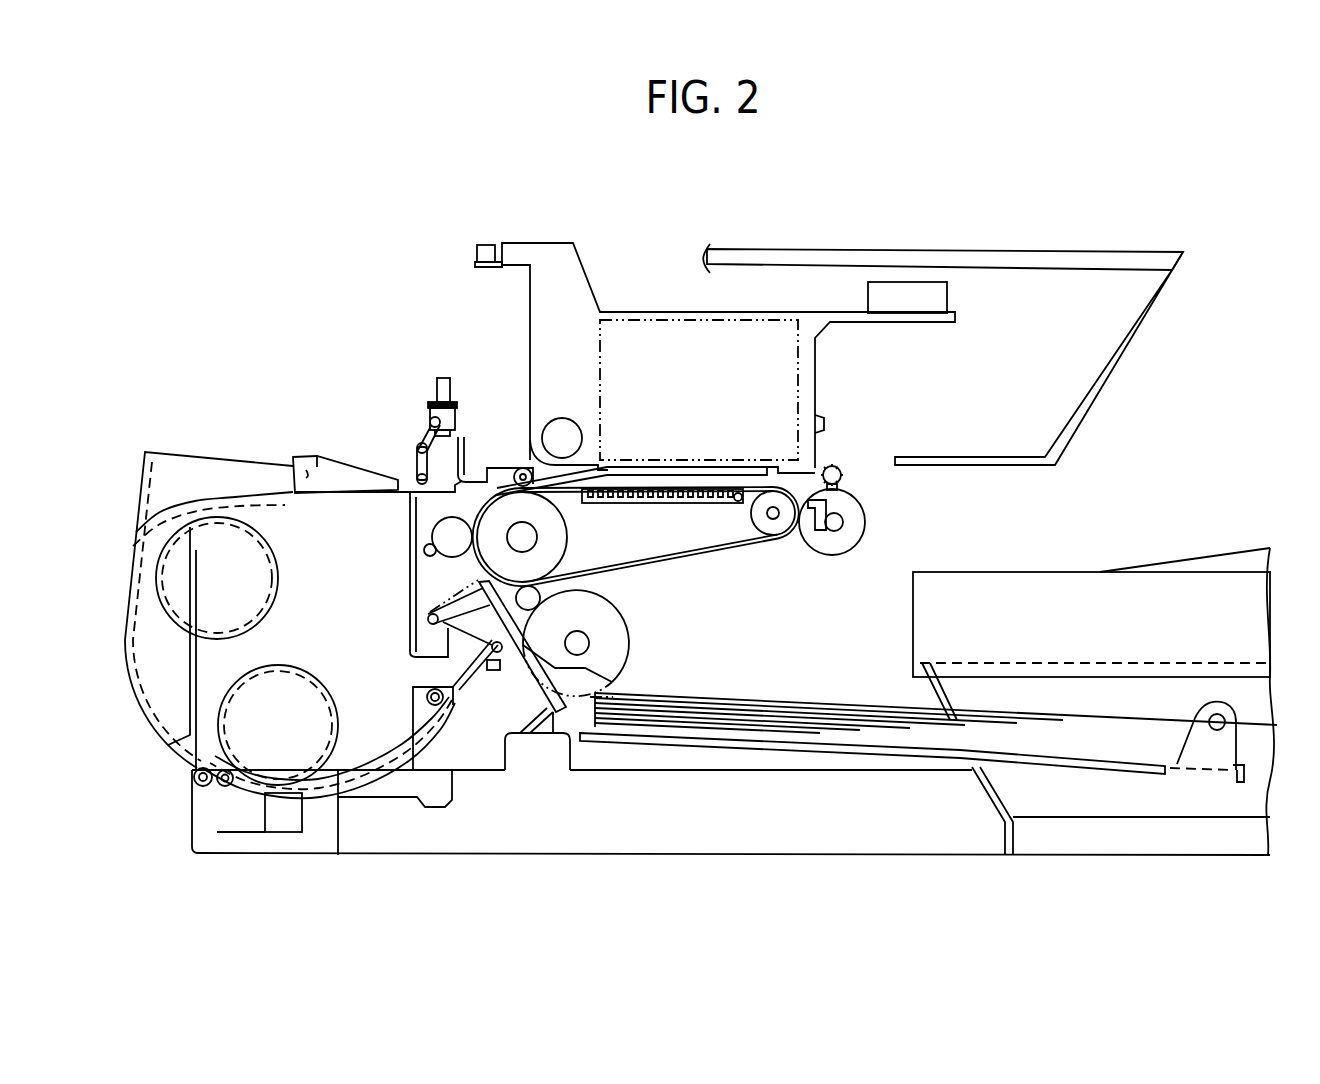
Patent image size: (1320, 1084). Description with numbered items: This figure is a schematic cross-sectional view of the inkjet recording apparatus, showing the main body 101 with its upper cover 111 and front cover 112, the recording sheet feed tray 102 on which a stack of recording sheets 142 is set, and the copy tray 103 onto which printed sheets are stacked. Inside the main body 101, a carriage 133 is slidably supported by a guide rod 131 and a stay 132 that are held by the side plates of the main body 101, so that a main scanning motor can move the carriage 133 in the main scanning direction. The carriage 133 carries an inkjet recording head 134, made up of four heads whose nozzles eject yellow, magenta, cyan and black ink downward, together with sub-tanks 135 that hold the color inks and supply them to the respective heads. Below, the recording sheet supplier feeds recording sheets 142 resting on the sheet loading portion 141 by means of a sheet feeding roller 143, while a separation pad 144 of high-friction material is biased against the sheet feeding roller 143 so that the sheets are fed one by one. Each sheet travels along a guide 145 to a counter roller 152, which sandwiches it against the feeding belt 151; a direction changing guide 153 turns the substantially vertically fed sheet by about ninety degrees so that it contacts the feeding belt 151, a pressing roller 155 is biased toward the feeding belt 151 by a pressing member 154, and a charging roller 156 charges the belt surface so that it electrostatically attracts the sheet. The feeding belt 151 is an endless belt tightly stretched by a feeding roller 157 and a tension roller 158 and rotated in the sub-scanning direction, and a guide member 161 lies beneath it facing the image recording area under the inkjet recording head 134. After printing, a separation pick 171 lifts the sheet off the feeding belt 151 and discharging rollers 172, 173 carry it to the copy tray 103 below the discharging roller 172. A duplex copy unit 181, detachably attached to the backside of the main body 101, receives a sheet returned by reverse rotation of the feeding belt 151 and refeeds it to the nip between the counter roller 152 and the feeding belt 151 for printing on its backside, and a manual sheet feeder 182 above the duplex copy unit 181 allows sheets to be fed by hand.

The main body 101 is at (949, 197).
The recording sheet feed tray 102 is at (1094, 847).
The copy tray 103 is at (1185, 552).
The upper cover 111 is at (1015, 253).
The front cover 112 is at (1120, 364).
The guide rod 131 is at (556, 428).
The stay 132 is at (482, 244).
The carriage 133 is at (582, 280).
The inkjet recording head 134 is at (722, 469).
The sub-tanks 135 is at (757, 333).
The sheet loading portion 141 is at (676, 745).
The recording sheets 142 is at (770, 727).
The sheet feeding roller 143 is at (628, 652).
The separation pad 144 is at (533, 736).
The guide 145 is at (490, 658).
The feeding belt 151 is at (689, 556).
The counter roller 152 is at (430, 547).
The direction changing guide 153 is at (418, 478).
The pressing member 154 is at (430, 430).
The pressing roller 155 is at (518, 469).
The charging roller 156 is at (540, 600).
The feeding roller 157 is at (566, 538).
The tension roller 158 is at (774, 530).
The guide member 161 is at (648, 507).
The separation pick 171 is at (818, 540).
The discharging roller 172 is at (866, 522).
The discharging roller 173 is at (845, 476).
The duplex copy unit 181 is at (156, 496).
The manual sheet feeder 182 is at (297, 446).